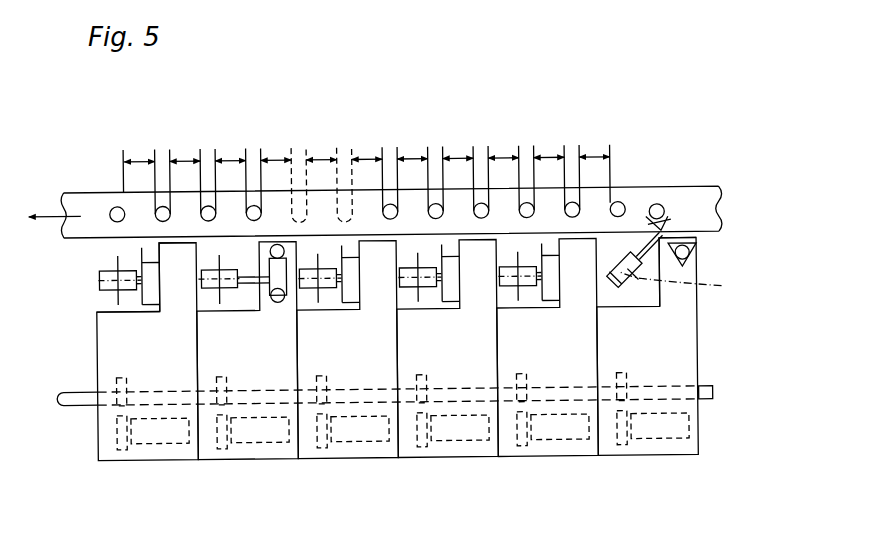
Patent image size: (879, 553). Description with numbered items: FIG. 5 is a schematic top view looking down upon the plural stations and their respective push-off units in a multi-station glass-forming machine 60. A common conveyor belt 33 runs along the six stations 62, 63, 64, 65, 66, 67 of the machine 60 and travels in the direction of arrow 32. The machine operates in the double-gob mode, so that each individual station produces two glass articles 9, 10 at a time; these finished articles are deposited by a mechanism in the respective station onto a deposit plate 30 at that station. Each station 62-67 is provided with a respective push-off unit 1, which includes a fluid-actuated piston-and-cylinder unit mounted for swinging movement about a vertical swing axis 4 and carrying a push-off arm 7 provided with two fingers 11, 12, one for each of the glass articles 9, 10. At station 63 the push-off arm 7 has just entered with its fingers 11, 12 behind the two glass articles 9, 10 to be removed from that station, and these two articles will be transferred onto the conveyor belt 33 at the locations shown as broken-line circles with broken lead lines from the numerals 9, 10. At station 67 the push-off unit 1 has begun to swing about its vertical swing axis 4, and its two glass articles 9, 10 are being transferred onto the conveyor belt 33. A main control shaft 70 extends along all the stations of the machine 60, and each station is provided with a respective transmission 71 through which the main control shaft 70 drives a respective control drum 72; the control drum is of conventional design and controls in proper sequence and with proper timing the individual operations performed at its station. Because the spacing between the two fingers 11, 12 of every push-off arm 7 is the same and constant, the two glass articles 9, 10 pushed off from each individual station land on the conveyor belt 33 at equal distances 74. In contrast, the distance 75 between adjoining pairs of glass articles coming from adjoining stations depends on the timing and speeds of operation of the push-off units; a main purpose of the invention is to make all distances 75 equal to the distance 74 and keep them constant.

The push-off unit 1 is at (110, 266).
The vertical swing axis 4 is at (670, 258).
The push-off arm 7 is at (140, 305).
The glass article 9 is at (345, 205).
The glass article 10 is at (300, 205).
The finger 11 is at (147, 303).
The finger 12 is at (150, 261).
The deposit plate 30 is at (188, 265).
The arrow 32 is at (49, 212).
The conveyor belt 33 is at (706, 187).
The multi-station machine 60 is at (78, 320).
The station 62 is at (185, 460).
The station 63 is at (285, 460).
The station 64 is at (387, 460).
The station 65 is at (485, 460).
The station 66 is at (583, 460).
The station 67 is at (686, 459).
The main control shaft 70 is at (72, 405).
The transmission 71 is at (117, 375).
The control drum 72 is at (130, 459).
The distance 74 is at (136, 158).
The distance 75 is at (182, 158).